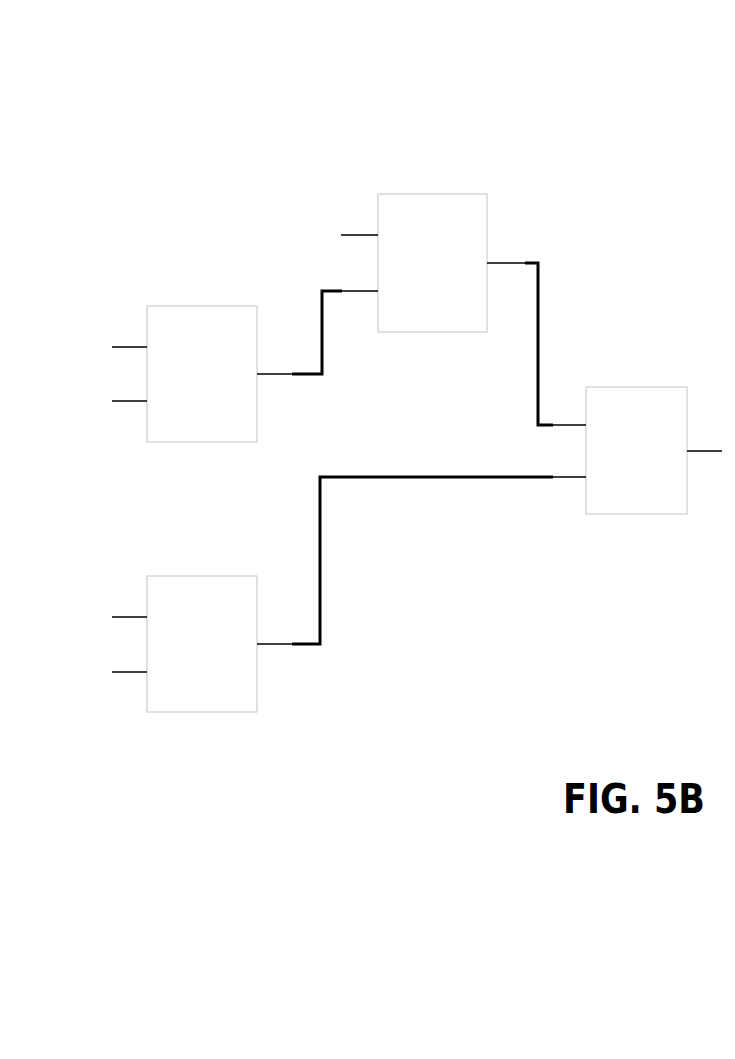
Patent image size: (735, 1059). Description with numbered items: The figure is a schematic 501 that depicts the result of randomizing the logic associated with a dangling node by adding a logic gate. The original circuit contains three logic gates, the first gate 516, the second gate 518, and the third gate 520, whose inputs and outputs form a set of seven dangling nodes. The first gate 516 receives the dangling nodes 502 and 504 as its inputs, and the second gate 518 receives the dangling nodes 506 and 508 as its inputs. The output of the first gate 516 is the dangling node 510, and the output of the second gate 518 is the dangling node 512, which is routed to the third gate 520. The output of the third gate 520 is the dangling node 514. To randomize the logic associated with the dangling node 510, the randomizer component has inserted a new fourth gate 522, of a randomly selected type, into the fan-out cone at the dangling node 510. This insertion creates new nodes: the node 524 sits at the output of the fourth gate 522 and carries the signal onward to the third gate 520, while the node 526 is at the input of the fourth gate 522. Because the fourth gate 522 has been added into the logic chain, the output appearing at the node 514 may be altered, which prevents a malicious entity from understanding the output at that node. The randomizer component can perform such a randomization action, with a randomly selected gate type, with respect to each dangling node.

The schematic 501 is at (608, 107).
The dangling node 502 is at (112, 347).
The dangling node 504 is at (112, 401).
The dangling node 506 is at (112, 617).
The dangling node 508 is at (112, 672).
The dangling node 510 is at (292, 374).
The dangling node 512 is at (292, 644).
The dangling node 514 is at (722, 451).
The Gate 1 516 is at (202, 306).
The Gate 2 518 is at (201, 576).
The Gate 3 520 is at (636, 387).
The Gate 4 522 is at (432, 194).
The new node 524 is at (525, 263).
The new node 526 is at (341, 235).